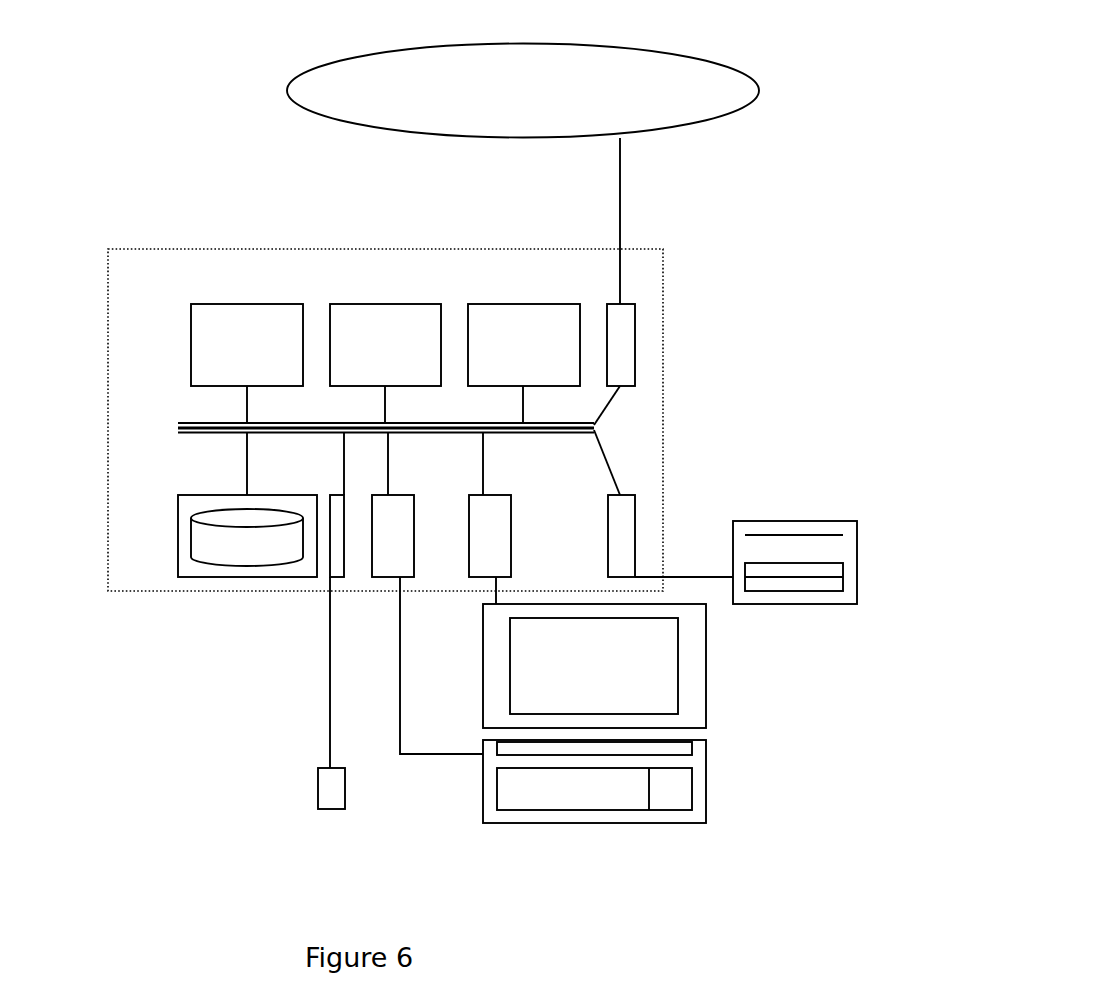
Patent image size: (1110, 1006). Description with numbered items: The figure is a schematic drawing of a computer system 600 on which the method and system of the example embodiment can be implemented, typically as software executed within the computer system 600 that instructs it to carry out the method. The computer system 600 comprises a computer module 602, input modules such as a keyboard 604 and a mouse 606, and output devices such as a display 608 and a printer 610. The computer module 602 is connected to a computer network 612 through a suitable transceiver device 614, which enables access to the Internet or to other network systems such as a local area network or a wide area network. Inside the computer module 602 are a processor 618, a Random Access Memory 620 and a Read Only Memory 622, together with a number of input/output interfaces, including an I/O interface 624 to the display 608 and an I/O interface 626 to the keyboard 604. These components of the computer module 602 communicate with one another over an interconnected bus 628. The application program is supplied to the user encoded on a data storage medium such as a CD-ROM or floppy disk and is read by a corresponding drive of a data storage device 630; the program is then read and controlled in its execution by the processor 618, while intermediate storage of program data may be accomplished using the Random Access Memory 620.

The computer system 600 is at (158, 870).
The computer module 602 is at (447, 420).
The keyboard 604 is at (594, 825).
The mouse 606 is at (304, 832).
The display 608 is at (656, 666).
The printer 610 is at (795, 520).
The computer network 612 is at (523, 159).
The transceiver device 614 is at (676, 355).
The processor 618 is at (524, 314).
The Random Access Memory (RAM) 620 is at (247, 314).
The Read Only Memory (ROM) 622 is at (385, 314).
The I/O interface 624 is at (463, 555).
The I/O interface 626 is at (379, 555).
The interconnected bus 628 is at (323, 441).
The data storage device 630 is at (234, 555).